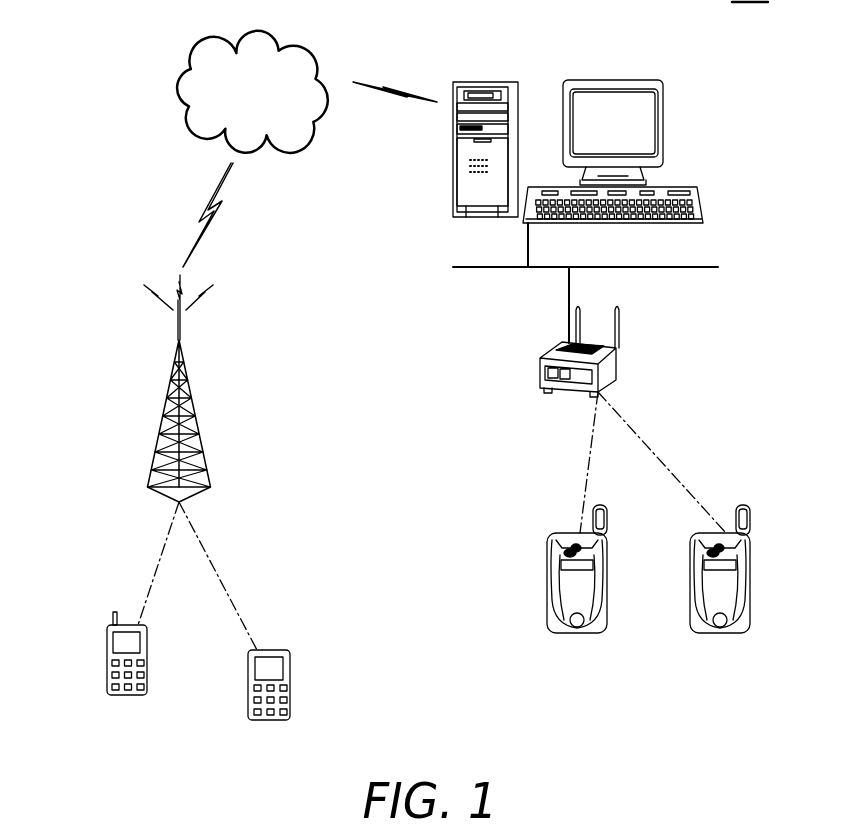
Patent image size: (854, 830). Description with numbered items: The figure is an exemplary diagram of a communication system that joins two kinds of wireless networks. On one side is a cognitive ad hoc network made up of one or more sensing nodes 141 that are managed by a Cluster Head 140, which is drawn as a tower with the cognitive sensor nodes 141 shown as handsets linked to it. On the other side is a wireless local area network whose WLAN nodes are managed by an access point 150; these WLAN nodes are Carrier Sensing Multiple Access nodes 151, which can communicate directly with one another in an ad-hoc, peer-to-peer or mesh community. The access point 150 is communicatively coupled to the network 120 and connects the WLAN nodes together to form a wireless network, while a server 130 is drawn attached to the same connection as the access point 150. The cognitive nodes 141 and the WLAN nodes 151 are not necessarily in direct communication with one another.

The network 120 is at (306, 33).
The server 130 is at (663, 82).
The Cluster Head (CH) 140 is at (196, 416).
The sensing nodes (SNs) 141 is at (147, 626).
The access point (AP) 150 is at (622, 336).
The CSMA nodes 151 is at (749, 567).